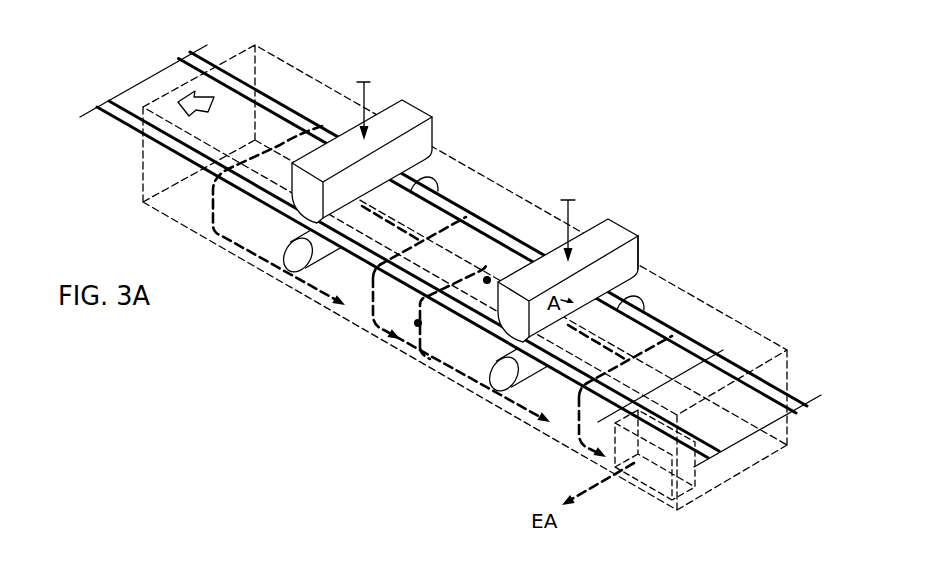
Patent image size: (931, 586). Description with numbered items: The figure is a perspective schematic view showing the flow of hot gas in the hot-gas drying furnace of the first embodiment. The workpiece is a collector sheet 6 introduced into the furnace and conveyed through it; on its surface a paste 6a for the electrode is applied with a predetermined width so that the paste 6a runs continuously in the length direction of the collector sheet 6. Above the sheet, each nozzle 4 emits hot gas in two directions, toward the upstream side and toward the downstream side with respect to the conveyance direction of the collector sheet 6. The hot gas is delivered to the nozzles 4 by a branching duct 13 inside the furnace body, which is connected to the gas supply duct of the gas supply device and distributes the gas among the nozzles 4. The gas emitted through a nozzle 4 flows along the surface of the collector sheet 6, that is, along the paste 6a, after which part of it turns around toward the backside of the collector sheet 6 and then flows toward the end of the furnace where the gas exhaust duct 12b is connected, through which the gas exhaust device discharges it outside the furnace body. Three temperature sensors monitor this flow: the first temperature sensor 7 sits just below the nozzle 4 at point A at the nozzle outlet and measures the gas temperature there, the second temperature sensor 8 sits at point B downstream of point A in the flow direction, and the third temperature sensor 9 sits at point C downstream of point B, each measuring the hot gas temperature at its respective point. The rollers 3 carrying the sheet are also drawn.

The transport roller 3 is at (297, 257).
The nozzle 4 is at (427, 102).
The collector sheet 6 is at (104, 83).
The paste 6a is at (157, 84).
The first temperature sensor 7 is at (651, 245).
The second temperature sensor 8 is at (491, 280).
The third temperature sensor 9 is at (418, 327).
The gas exhaust duct 12b is at (613, 478).
The branching duct 13 is at (364, 97).